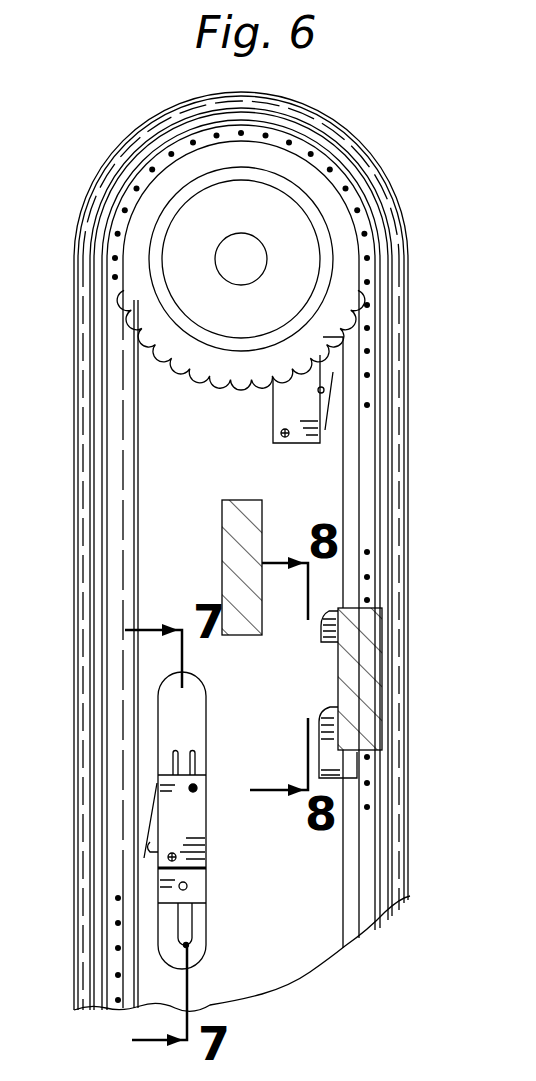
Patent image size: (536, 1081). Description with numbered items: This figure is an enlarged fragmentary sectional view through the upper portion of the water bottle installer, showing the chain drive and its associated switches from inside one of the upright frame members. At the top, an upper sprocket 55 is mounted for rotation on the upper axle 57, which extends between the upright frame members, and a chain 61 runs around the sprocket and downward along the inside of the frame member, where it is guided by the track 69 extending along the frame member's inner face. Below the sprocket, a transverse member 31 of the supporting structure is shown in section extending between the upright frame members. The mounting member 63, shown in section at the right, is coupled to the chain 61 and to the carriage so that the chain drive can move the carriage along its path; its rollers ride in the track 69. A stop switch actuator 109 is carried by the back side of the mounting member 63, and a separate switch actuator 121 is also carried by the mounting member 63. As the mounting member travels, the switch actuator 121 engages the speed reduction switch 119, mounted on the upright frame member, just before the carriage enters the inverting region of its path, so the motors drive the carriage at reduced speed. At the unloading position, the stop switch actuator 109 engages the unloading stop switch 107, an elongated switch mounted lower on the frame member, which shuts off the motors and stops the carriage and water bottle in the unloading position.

The transverse member 31 is at (235, 520).
The upper sprocket 55 is at (335, 212).
The upper axle 57 is at (230, 262).
The chain 61 is at (333, 133).
The mounting member 63 is at (358, 657).
The track 69 is at (112, 419).
The unloading stop switch 107 is at (207, 850).
The stop switch actuator 109 is at (330, 618).
The speed reduction switch 119 is at (290, 408).
The switch actuator 121 is at (330, 757).